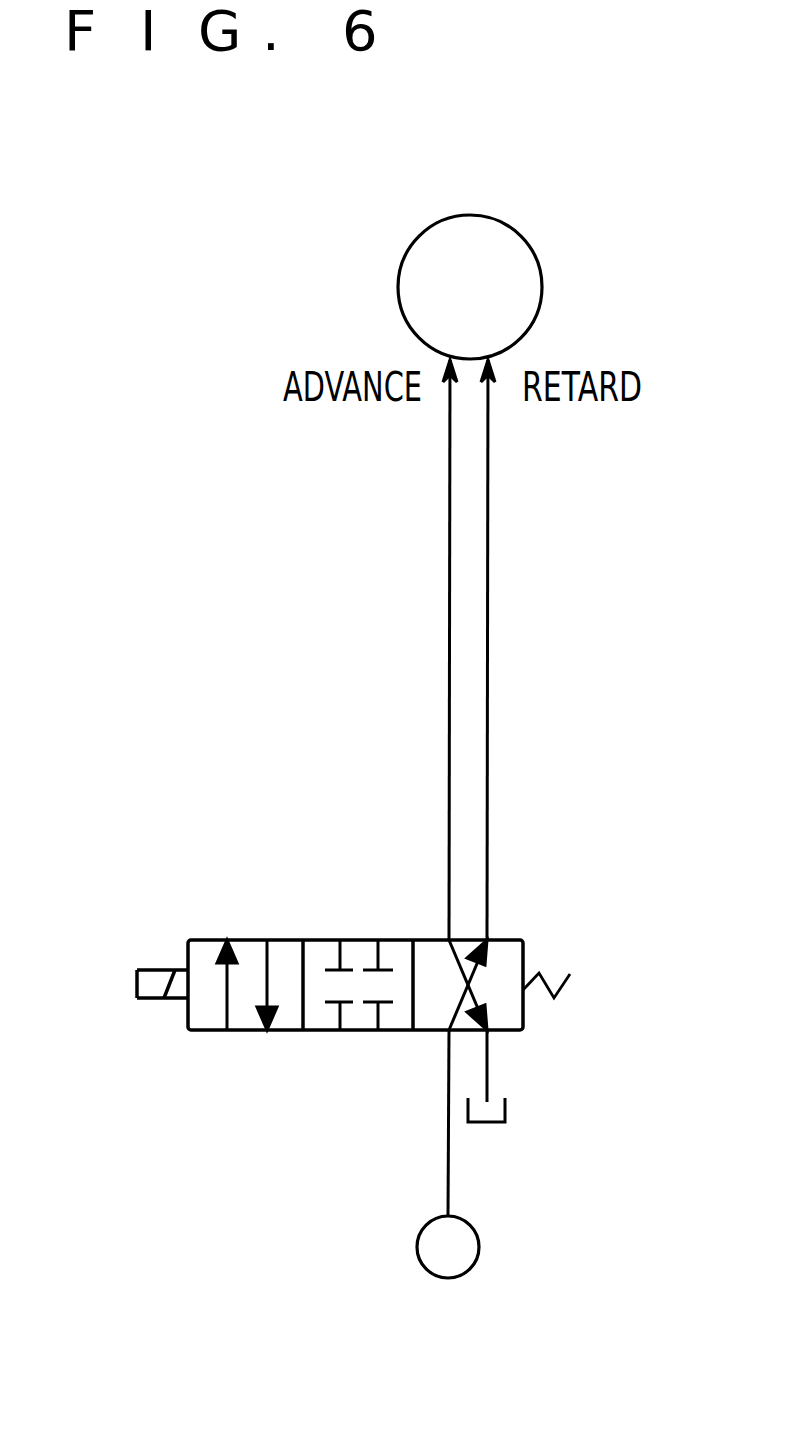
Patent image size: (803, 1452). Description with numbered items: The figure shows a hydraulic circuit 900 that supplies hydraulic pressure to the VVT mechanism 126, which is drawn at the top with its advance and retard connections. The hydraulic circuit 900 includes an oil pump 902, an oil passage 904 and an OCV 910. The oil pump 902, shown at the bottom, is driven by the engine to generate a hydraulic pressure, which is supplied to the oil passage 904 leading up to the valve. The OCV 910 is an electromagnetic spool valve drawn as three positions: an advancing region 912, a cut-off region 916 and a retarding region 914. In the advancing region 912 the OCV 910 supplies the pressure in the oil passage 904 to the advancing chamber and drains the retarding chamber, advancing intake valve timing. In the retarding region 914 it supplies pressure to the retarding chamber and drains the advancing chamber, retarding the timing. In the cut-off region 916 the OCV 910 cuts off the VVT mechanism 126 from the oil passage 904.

The VVT mechanism 126 is at (452, 215).
The hydraulic circuit 900 is at (319, 717).
The oil pump 902 is at (448, 1278).
The oil passage 904 is at (450, 1165).
The OCV (Oil Control Valve) 910 is at (353, 985).
The advancing region 912 is at (247, 1030).
The retarding region 914 is at (427, 1030).
The cut-off region 916 is at (358, 1030).